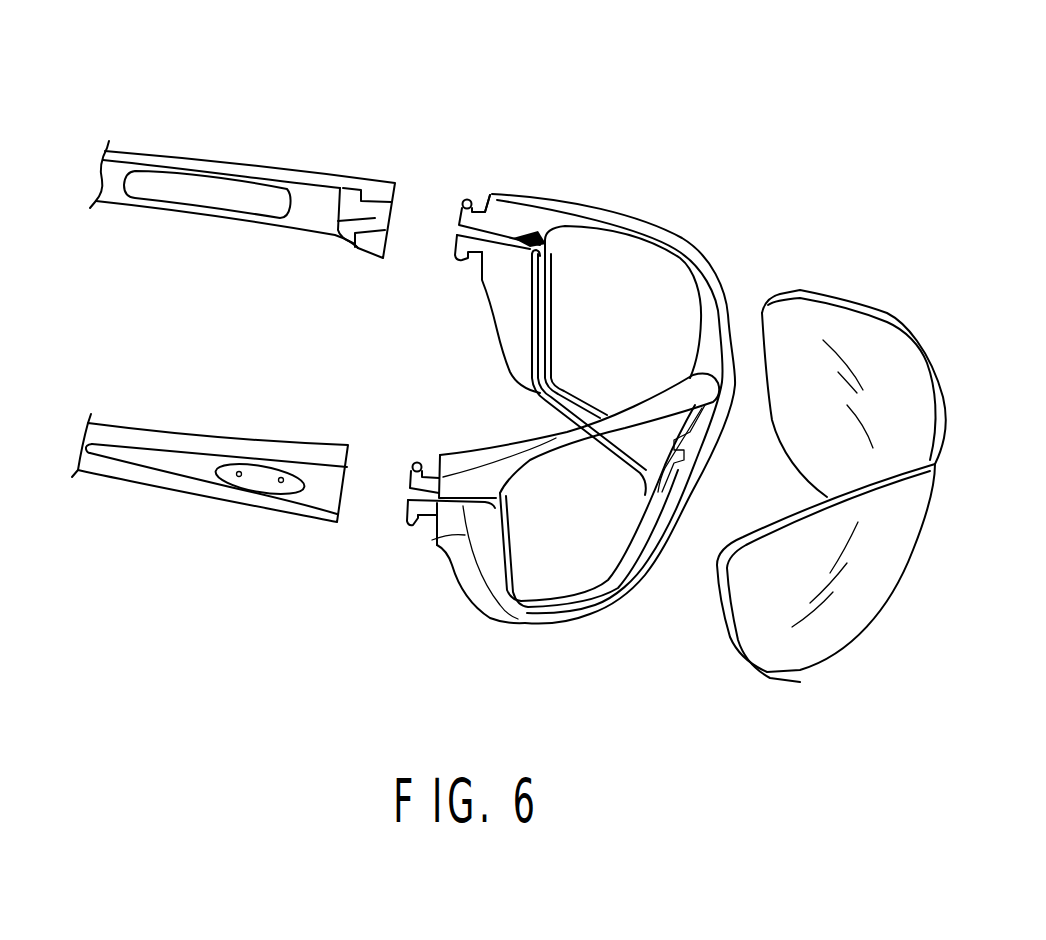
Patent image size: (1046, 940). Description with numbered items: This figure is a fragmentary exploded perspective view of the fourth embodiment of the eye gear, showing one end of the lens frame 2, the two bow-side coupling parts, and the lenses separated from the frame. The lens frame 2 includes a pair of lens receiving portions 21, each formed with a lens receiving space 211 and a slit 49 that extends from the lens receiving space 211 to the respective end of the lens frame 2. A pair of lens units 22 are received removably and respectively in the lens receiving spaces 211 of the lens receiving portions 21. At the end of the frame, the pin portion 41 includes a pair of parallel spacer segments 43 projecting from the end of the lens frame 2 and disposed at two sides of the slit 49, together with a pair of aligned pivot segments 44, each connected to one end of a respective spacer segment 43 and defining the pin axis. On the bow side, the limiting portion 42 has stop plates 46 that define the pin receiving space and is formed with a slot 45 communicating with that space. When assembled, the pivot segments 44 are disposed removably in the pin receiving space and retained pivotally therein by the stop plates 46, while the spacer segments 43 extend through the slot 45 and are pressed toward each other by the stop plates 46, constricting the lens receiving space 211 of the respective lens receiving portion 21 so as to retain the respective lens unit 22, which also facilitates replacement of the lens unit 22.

The lens frame 2 is at (544, 377).
The lens receiving portion 21 is at (600, 208).
The lens receiving space 211 is at (540, 387).
The lens unit 22 is at (838, 290).
The pin portion 41 is at (434, 345).
The limiting portion 42 is at (238, 277).
The spacer segment 43 is at (482, 207).
The pivot segment 44 is at (467, 199).
The slot 45 is at (345, 222).
The stop plate 46 is at (387, 180).
The slit 49 is at (511, 247).